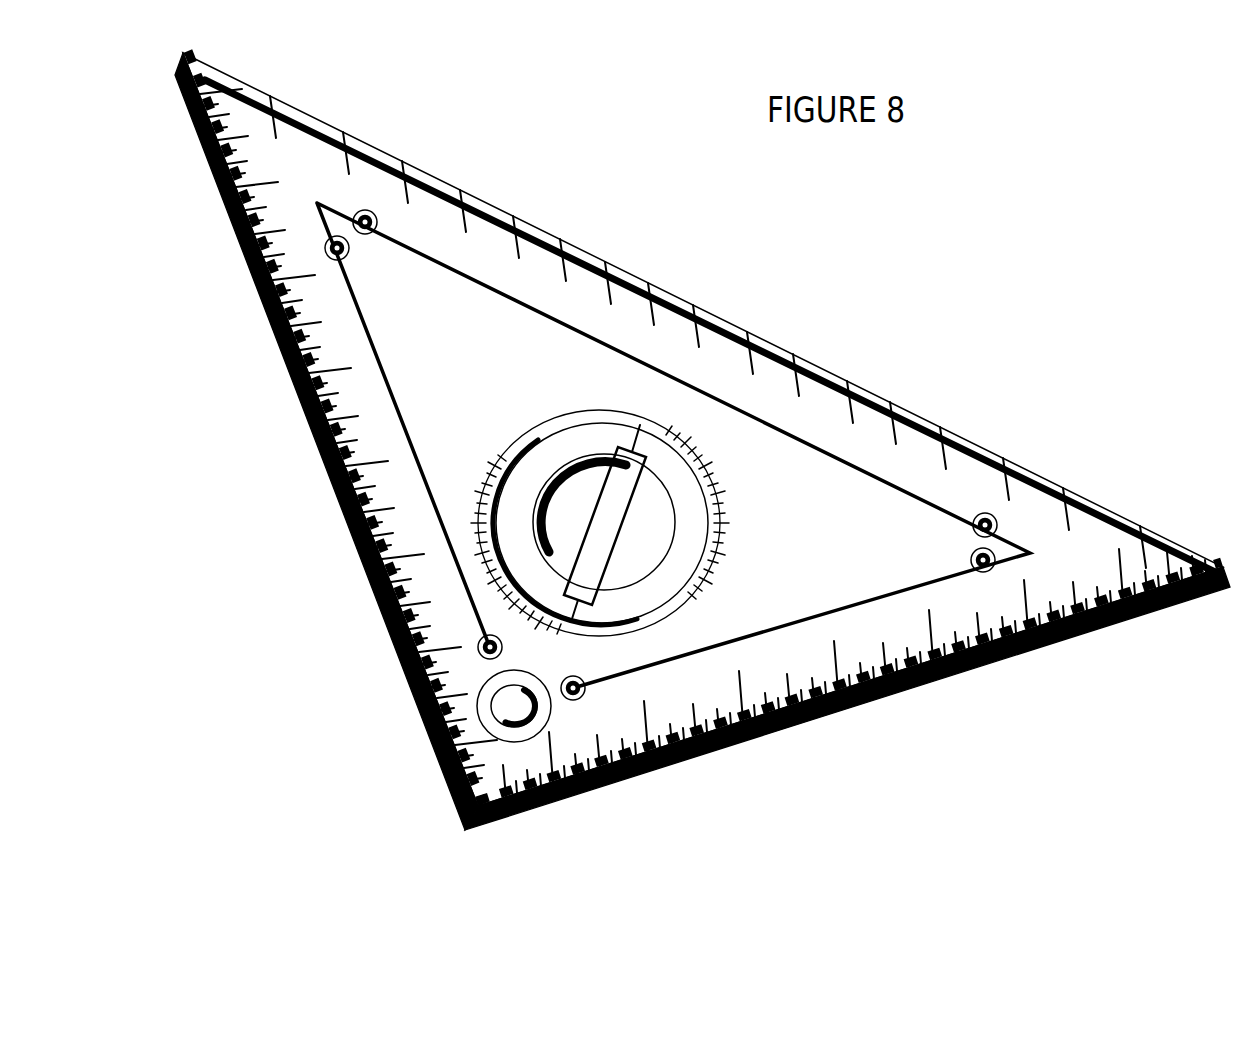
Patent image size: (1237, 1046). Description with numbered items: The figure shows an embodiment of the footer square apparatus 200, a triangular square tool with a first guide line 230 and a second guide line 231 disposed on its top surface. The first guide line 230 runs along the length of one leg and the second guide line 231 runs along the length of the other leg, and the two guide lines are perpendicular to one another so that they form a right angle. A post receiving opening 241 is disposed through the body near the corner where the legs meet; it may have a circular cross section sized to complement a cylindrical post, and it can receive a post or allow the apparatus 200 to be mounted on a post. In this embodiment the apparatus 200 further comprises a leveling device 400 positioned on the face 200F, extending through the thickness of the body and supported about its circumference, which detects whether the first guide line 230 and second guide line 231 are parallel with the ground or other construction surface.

The footer square apparatus 200 is at (702, 467).
The face 200F is at (845, 549).
The first guide line 230 is at (443, 522).
The second guide line 231 is at (815, 616).
The post receiving opening 241 is at (518, 715).
The leveling device 400 is at (597, 437).